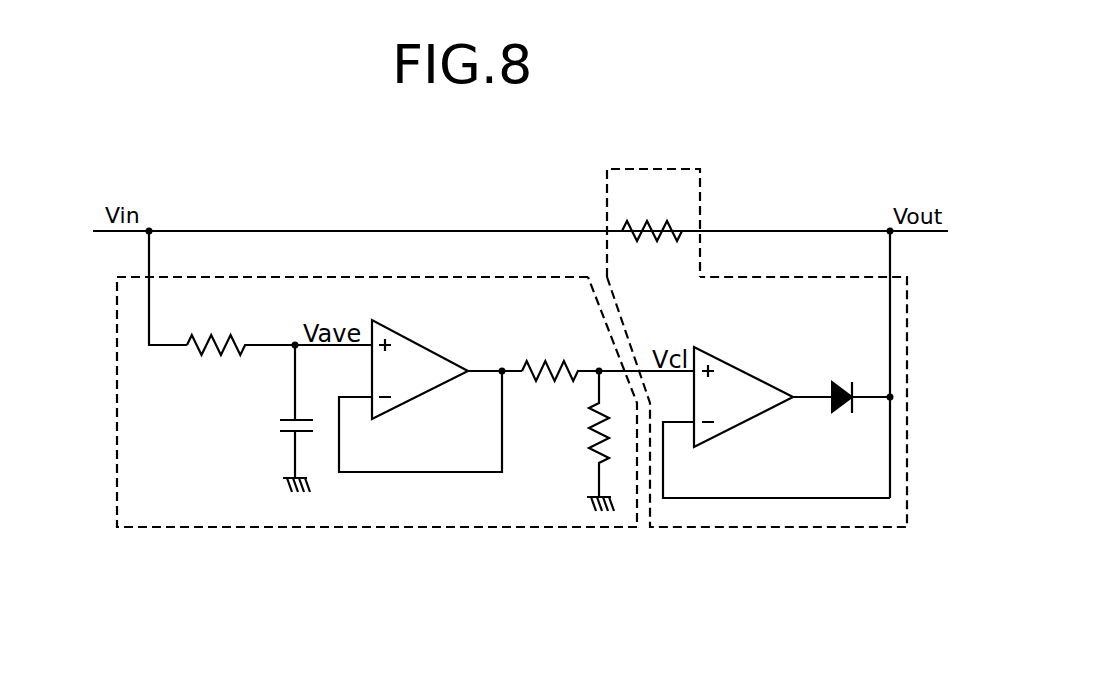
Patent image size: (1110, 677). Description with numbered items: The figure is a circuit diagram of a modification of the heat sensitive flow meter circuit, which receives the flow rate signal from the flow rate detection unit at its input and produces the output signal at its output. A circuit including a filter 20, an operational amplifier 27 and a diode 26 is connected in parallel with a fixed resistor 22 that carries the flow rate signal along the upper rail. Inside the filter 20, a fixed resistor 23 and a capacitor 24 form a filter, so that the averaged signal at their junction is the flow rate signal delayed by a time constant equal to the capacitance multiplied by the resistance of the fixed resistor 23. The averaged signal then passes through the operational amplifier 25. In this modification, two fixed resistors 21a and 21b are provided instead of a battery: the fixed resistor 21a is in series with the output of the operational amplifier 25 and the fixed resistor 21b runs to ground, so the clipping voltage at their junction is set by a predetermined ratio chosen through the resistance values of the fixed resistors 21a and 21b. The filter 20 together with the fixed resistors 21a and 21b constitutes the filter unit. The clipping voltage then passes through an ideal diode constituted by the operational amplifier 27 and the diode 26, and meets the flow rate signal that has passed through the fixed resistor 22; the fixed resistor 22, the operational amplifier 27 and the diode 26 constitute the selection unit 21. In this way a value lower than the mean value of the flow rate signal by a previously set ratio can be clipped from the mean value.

The filter 20 is at (386, 530).
The selection unit 21 is at (778, 530).
The fixed resistor 21a is at (577, 362).
The fixed resistor 21b is at (585, 448).
The fixed resistor 22 is at (675, 221).
The fixed resistor 23 is at (217, 370).
The capacitor 24 is at (280, 423).
The operational amplifier 25 is at (400, 335).
The diode 26 is at (843, 380).
The operational amplifier 27 is at (747, 373).